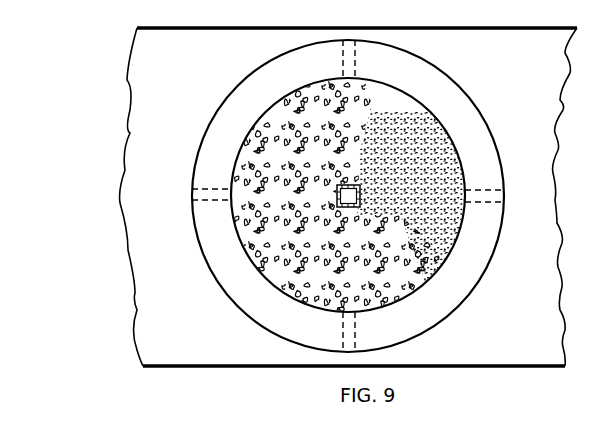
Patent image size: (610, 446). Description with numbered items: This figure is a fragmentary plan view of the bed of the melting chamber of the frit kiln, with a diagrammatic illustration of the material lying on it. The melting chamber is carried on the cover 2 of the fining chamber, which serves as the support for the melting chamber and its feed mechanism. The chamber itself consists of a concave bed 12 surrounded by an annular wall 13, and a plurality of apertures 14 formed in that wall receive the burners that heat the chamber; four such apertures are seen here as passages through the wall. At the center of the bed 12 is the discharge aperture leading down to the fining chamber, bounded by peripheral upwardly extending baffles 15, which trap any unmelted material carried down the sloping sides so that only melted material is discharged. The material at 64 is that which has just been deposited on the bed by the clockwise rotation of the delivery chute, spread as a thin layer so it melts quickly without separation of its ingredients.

The cover 2 is at (535, 87).
The concave bed 12 is at (392, 110).
The annular wall 13 is at (457, 277).
The apertures 14 is at (342, 47).
The peripheral upwardly extending baffles 15 is at (348, 193).
The material 64 is at (350, 117).